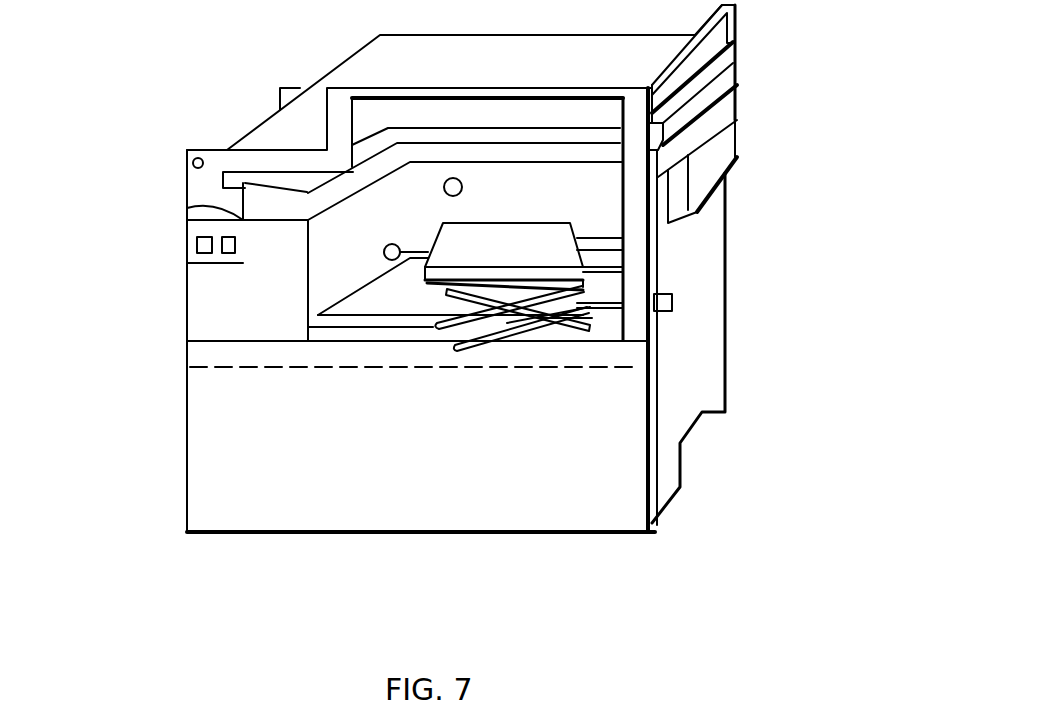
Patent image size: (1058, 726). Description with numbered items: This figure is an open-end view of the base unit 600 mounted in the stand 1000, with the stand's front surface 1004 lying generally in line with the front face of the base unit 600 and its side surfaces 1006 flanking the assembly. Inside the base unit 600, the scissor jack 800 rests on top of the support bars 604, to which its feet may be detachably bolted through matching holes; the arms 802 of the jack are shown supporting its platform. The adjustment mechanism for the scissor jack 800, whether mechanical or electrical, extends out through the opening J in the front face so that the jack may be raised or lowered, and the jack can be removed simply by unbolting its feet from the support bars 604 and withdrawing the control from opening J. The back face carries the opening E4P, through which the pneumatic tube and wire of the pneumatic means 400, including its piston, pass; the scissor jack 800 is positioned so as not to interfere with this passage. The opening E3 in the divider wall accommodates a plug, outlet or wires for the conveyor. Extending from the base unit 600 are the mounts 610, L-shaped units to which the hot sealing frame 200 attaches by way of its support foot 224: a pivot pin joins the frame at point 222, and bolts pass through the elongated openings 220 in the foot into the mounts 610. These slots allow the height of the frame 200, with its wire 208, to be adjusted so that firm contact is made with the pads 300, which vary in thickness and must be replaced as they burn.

The stand 1000 is at (663, 494).
The side surface 1006 is at (417, 422).
The front surface 1004 is at (690, 380).
The mount 610 is at (202, 308).
The pivot point 222 is at (187, 158).
The support foot 224 is at (187, 207).
The elongated openings 220 is at (187, 245).
The base unit 600 is at (652, 233).
The support bars 604 is at (293, 540).
The opening E3 is at (477, 198).
The opening E4P is at (387, 234).
The scissor jack 800 is at (504, 255).
The scissor lift arm 802 is at (592, 318).
The opening J is at (672, 302).
The wire 208 is at (737, 48).
The hot sealing frame 200 is at (735, 80).
The pads 300 is at (713, 133).
The pneumatic means 400 is at (715, 156).